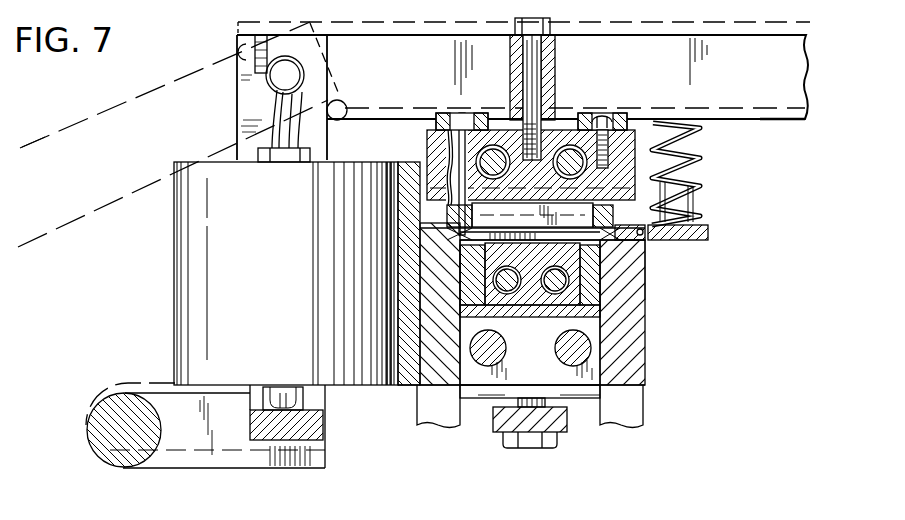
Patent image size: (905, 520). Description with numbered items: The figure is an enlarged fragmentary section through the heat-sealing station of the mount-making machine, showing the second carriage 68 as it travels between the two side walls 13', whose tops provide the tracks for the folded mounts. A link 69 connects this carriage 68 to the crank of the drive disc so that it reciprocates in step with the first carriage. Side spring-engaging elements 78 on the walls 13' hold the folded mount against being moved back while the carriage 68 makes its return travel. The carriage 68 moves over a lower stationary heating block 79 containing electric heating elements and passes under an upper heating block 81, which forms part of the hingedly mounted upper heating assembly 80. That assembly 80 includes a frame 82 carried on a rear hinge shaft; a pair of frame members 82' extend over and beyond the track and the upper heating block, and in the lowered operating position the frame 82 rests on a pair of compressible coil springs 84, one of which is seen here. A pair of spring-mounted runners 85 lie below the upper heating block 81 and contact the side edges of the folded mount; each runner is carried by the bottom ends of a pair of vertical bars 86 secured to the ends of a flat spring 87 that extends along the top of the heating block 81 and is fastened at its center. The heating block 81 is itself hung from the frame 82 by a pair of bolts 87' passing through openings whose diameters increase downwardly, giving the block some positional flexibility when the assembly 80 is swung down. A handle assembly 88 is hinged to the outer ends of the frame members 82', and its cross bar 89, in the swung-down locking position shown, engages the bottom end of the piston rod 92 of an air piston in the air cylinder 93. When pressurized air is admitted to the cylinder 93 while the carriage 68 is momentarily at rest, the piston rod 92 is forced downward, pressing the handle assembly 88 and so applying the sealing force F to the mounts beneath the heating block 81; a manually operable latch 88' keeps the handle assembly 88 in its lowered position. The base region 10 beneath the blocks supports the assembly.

The frame 10 is at (456, 223).
The side walls 13' is at (523, 407).
The second carriage 68 is at (588, 280).
The link 69 is at (563, 420).
The side spring-engaging elements 78 is at (646, 243).
The lower stationary heating block 79 is at (572, 308).
The upper heating assembly 80 is at (773, 132).
The upper heating block 81 is at (436, 155).
The frame 82 is at (523, 91).
The frame members 82' is at (418, 77).
The compressible coil springs 84 is at (694, 178).
The spring-mounted runners 85 is at (422, 182).
The vertical bars 86 is at (446, 138).
The flat spring 87 is at (524, 120).
The bolts 87' is at (549, 89).
The handle assembly 88 is at (182, 245).
The manually operable latch 88' is at (127, 106).
The cross bar 89 is at (320, 434).
The piston rod 92 is at (304, 401).
The air cylinder 93 is at (286, 273).
The force F is at (632, 258).